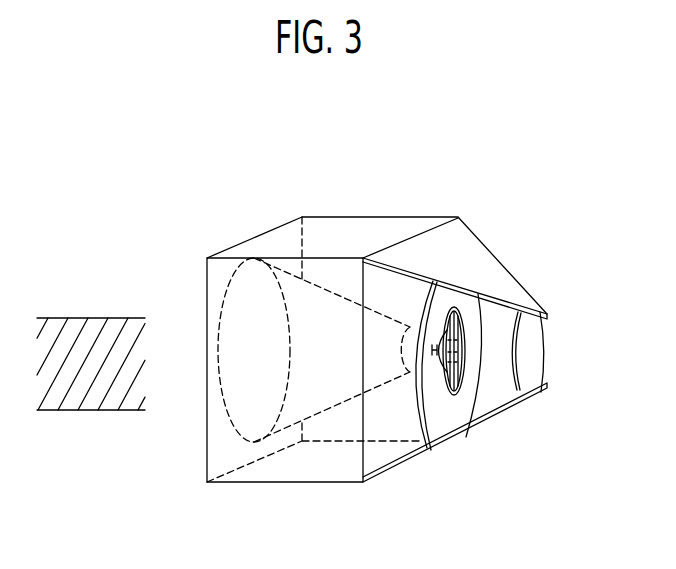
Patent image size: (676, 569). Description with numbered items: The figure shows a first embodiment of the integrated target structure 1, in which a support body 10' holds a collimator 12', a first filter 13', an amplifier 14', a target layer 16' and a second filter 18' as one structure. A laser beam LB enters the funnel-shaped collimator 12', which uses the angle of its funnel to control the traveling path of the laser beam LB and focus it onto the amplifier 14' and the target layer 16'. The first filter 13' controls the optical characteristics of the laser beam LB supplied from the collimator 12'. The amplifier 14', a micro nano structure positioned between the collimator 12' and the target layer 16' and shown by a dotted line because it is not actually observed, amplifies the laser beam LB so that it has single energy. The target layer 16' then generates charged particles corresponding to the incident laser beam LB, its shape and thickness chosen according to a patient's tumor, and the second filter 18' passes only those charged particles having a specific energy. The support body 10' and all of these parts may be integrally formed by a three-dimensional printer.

The integrated target structure 1 is at (557, 140).
The laser beam LB is at (90, 318).
The support body 10' is at (377, 337).
The collimator 12' is at (314, 301).
The first filter 13' is at (446, 404).
The amplifier 14' is at (476, 394).
The target layer 16' is at (508, 395).
The second filter 18' is at (569, 352).